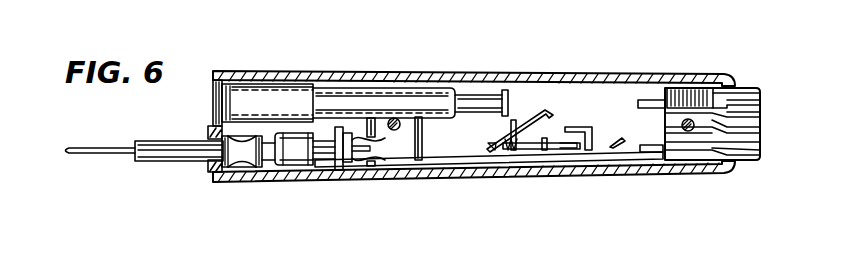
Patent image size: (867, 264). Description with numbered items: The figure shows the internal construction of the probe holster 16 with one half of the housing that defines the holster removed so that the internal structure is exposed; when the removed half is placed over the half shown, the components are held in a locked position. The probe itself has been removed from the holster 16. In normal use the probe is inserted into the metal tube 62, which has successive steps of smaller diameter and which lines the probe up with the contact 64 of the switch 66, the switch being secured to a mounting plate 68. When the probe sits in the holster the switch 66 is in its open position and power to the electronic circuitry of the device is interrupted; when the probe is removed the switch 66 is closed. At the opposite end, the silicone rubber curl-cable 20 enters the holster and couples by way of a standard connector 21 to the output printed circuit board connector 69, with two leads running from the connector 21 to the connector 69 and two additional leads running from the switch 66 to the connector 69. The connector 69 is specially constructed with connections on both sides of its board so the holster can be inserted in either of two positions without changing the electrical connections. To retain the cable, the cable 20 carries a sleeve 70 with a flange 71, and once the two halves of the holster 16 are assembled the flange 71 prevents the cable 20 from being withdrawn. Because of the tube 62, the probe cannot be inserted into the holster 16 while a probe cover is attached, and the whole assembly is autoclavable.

The probe holster 16 is at (397, 66).
The curl-cable 20 is at (95, 153).
The connector 21 is at (297, 155).
The metal tube 62 is at (260, 98).
The contact 64 is at (547, 110).
The switch 66 is at (543, 160).
The mounting plate 68 is at (477, 157).
The printed circuit board connector 69 is at (760, 118).
The sleeve 70 is at (178, 156).
The flange 71 is at (243, 155).